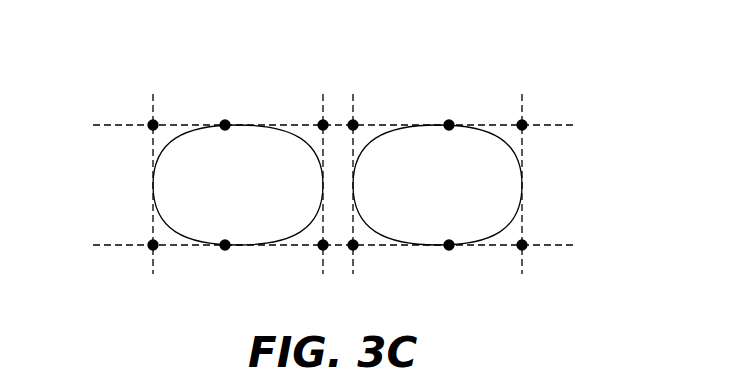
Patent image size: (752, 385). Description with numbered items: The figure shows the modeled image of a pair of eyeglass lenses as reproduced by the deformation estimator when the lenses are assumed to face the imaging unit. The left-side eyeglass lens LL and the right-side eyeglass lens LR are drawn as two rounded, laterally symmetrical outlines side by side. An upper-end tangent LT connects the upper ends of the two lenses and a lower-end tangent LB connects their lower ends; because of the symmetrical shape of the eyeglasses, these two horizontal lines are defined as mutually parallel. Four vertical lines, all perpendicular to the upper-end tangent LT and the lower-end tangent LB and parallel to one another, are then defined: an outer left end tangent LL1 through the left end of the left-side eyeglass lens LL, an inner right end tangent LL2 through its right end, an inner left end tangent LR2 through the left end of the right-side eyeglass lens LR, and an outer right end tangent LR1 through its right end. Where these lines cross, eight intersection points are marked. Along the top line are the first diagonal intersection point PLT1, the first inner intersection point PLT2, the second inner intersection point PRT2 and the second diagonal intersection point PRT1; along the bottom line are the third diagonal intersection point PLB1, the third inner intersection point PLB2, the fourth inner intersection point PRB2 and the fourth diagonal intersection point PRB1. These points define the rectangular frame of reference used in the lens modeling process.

The upper-end tangent LT is at (314, 127).
The lower-end tangent LB is at (314, 247).
The outer left end tangent LL1 is at (154, 203).
The inner right end tangent LL2 is at (315, 203).
The inner left end tangent LR2 is at (371, 203).
The outer right end tangent LR1 is at (520, 203).
The left-side eyeglass lens LL is at (238, 185).
The right-side eyeglass lens LR is at (437, 185).
The first diagonal intersection point PLT1 is at (151, 123).
The first inner intersection point PLT2 is at (321, 123).
The second inner intersection point PRT2 is at (356, 123).
The second diagonal intersection point PRT1 is at (525, 123).
The third diagonal intersection point PLB1 is at (151, 244).
The third inner intersection point PLB2 is at (319, 247).
The fourth inner intersection point PRB2 is at (357, 247).
The fourth diagonal intersection point PRB1 is at (526, 244).